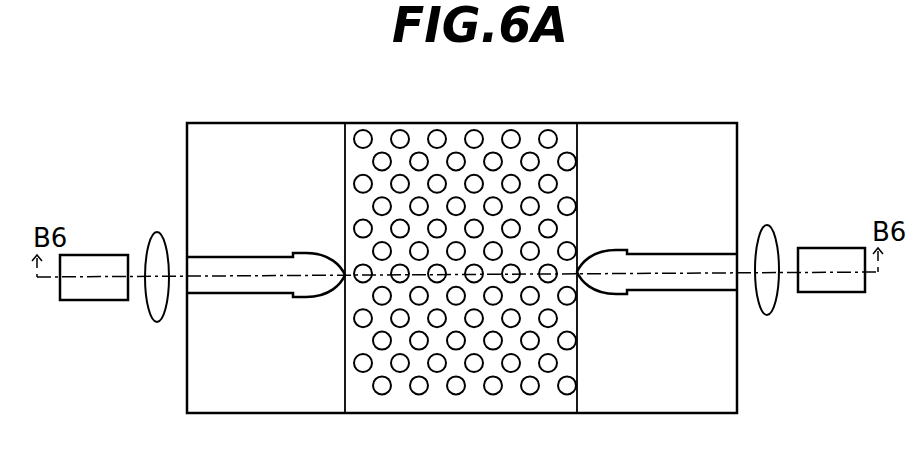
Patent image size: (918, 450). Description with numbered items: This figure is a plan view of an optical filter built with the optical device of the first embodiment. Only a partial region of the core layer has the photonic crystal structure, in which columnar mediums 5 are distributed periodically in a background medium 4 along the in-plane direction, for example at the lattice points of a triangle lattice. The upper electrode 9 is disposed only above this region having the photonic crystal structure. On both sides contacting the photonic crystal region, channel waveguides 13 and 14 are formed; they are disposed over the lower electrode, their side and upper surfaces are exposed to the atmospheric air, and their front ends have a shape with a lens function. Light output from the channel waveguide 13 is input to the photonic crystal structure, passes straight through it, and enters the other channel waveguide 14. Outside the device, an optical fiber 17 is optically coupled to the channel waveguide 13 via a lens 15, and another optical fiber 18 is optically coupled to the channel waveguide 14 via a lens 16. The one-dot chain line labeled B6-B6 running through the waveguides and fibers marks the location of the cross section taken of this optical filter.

The background medium 4 is at (418, 130).
The columnar mediums 5 is at (478, 133).
The upper electrode 9 is at (578, 140).
The channel waveguide 13 is at (224, 256).
The channel waveguide 14 is at (674, 253).
The lens 15 is at (148, 232).
The lens 16 is at (768, 225).
The optical fiber 17 is at (104, 254).
The optical fiber 18 is at (816, 248).